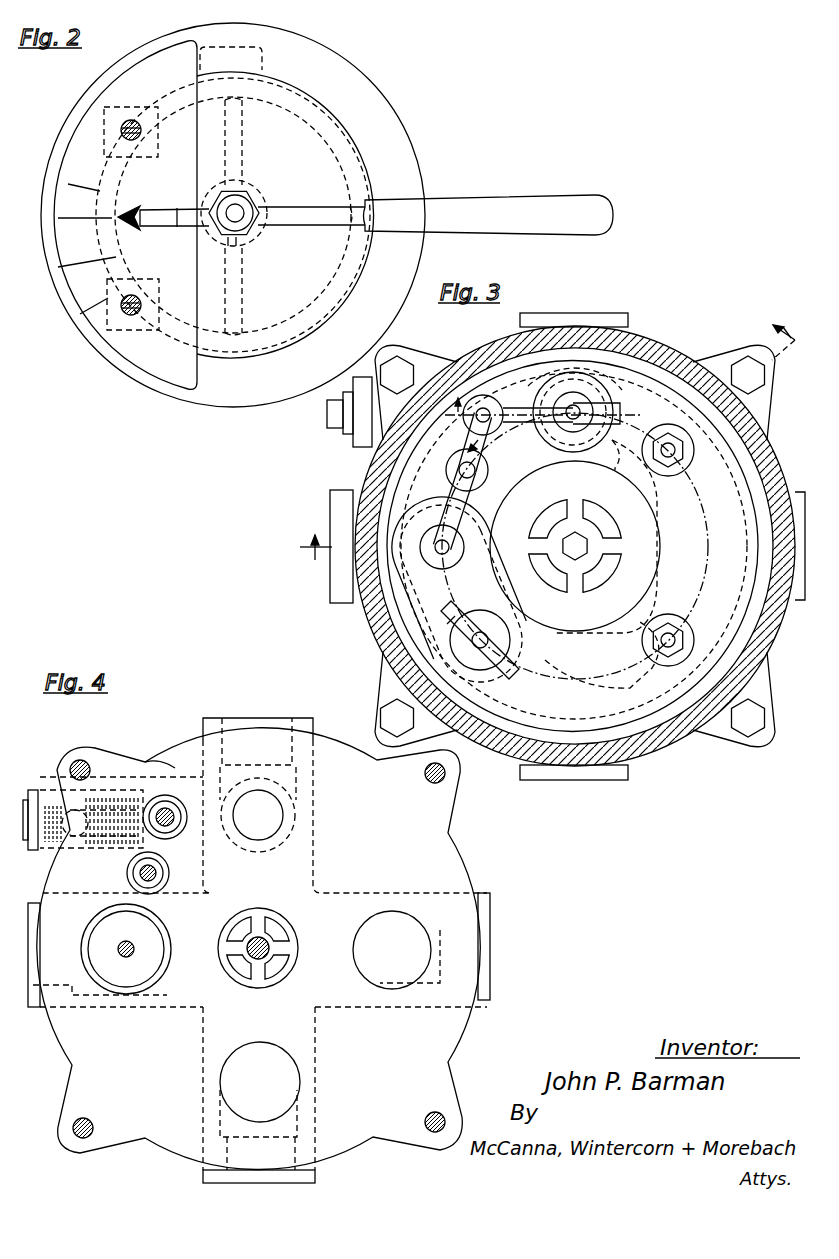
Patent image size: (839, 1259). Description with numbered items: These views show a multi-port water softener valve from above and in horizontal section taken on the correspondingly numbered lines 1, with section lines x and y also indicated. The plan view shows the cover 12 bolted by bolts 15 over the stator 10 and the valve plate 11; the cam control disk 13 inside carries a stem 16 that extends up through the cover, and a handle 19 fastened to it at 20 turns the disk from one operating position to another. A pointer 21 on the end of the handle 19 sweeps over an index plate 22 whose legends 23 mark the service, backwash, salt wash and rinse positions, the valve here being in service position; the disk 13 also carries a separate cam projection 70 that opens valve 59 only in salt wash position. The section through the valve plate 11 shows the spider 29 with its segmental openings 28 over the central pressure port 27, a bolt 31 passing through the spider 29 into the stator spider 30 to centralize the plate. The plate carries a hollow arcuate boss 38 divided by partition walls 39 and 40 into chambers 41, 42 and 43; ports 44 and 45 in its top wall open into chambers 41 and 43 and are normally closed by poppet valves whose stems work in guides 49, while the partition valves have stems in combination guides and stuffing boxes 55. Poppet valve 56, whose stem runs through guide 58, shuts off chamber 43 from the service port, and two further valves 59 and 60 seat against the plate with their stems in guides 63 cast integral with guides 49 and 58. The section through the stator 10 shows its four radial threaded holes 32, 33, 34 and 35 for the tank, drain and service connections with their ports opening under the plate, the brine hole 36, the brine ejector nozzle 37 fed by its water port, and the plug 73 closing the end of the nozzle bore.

In FIG. 3, the section line 1 is at (547, 438).
In FIG. 4, the stator 10 is at (455, 865).
In FIG. 3, the valve plate 11 is at (735, 446).
In FIG. 2, the cover 12 is at (388, 108).
In FIG. 3, the cover 12 is at (648, 345).
In FIG. 2, the cam control disk 13 is at (318, 112).
In FIG. 3, the bolts 15 is at (742, 727).
In FIG. 4, the bolts 15 is at (443, 778).
In FIG. 2, the stem 16 is at (240, 210).
In FIG. 2, the handle 19 is at (398, 233).
In FIG. 2, the handle fastening 20 is at (236, 244).
In FIG. 2, the pointer 21 is at (166, 222).
In FIG. 2, the index plate 22 is at (80, 142).
In FIG. 2, the index marks 23 is at (116, 190).
In FIG. 3, the central pressure port 27 is at (553, 575).
In FIG. 3, the segmental-shaped openings 28 is at (598, 576).
In FIG. 3, the spider portion 29 is at (603, 548).
In FIG. 4, the spider portion 30 is at (283, 950).
In FIG. 3, the bolt 31 is at (575, 560).
In FIG. 4, the bolt 31 is at (256, 938).
In FIG. 4, the radial threaded hole 32 is at (265, 722).
In FIG. 4, the radial threaded hole 33 is at (480, 920).
In FIG. 4, the radial threaded hole 34 is at (315, 1168).
In FIG. 4, the radial threaded hole 35 is at (35, 990).
In FIG. 4, the threaded hole 36 is at (168, 760).
In FIG. 4, the brine ejector nozzle 37 is at (125, 775).
In FIG. 3, the hollow arcuate boss 38 is at (637, 718).
In FIG. 3, the partition wall 39 is at (614, 448).
In FIG. 3, the partition wall 40 is at (635, 668).
In FIG. 3, the chamber 41 is at (618, 380).
In FIG. 3, the chamber 42 is at (655, 497).
In FIG. 3, the chamber 43 is at (490, 575).
In FIG. 3, the port 44 is at (565, 392).
In FIG. 3, the port 45 is at (507, 641).
In FIG. 3, the guides 49 is at (510, 675).
In FIG. 3, the combination valve stem guides and stuffing boxes 55 is at (668, 476).
In FIG. 4, the poppet valve 56 is at (126, 949).
In FIG. 3, the guide 58 is at (428, 555).
In FIG. 4, the poppet valve 59 is at (158, 798).
In FIG. 4, the poppet valve 60 is at (158, 865).
In FIG. 3, the guides 63 is at (499, 430).
In FIG. 2, the cam projection 70 is at (262, 62).
In FIG. 4, the plug 73 is at (38, 788).
In FIG. 3, the section line x is at (538, 413).
In FIG. 3, the section line y is at (485, 450).